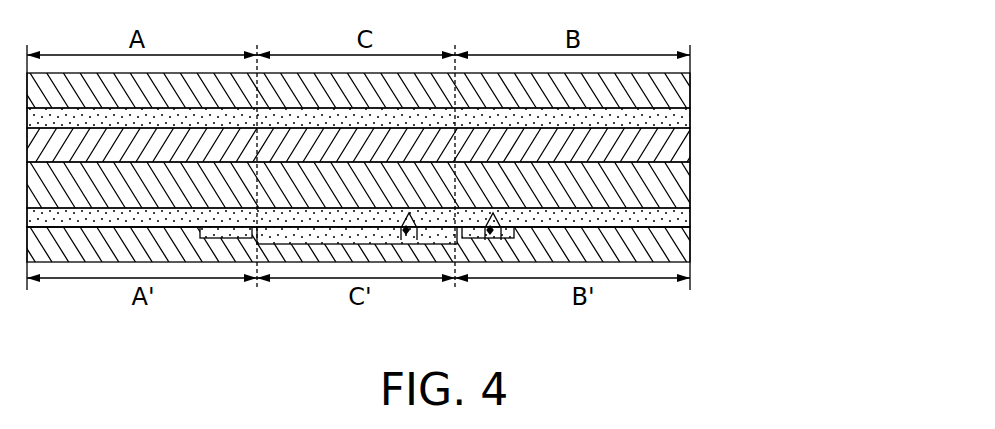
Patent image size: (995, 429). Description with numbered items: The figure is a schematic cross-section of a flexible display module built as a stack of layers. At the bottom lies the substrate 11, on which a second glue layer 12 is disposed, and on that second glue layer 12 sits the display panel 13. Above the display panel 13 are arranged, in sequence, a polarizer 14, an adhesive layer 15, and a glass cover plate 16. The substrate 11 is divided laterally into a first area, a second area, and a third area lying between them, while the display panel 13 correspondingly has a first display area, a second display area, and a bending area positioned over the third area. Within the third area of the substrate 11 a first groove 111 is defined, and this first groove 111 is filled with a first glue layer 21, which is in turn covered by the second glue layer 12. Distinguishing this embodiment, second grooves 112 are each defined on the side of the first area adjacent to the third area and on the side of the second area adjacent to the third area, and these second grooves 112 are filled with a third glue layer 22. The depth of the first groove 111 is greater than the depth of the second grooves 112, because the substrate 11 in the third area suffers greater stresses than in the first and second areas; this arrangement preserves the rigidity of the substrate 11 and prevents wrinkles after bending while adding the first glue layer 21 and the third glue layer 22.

The substrate 11 is at (679, 248).
The second glue layer 12 is at (679, 217).
The display panel 13 is at (679, 182).
The polarizer 14 is at (679, 145).
The adhesive layer 15 is at (679, 115).
The glass cover plate 16 is at (679, 80).
The first glue layer 21 is at (302, 244).
The third glue layer 22 is at (221, 238).
The first groove 111 is at (420, 240).
The second grooves 112 is at (504, 238).